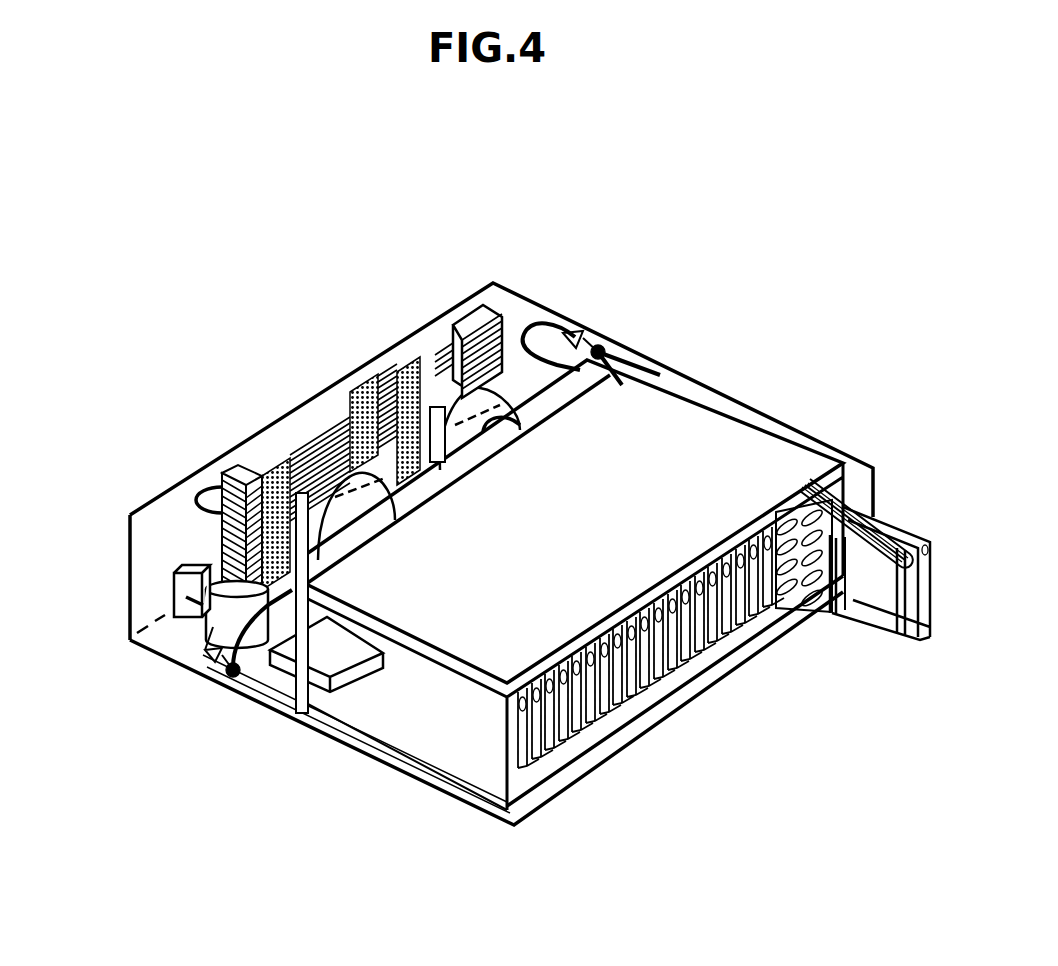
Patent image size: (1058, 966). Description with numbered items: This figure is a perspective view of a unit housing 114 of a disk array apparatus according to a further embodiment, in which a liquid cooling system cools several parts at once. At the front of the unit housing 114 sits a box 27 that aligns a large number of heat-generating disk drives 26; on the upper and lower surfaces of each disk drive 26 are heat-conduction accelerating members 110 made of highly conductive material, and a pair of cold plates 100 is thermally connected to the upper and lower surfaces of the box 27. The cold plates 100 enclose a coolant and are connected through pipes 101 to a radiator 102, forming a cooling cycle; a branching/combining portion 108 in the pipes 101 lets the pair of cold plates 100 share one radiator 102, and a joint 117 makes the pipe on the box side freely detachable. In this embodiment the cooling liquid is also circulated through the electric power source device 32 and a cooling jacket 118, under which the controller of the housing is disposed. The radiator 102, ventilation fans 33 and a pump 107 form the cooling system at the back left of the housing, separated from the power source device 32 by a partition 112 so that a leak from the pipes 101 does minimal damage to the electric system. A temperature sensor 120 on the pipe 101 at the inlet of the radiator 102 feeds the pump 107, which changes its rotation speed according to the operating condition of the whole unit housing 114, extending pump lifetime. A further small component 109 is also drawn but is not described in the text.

The disk drive 26 is at (888, 528).
The box 27 is at (432, 740).
The power source device 32 is at (560, 393).
The ventilation fan 33 is at (437, 372).
The cold plate 100 is at (688, 640).
The pipe 101 is at (262, 680).
The radiator 102 is at (265, 467).
The pump 107 is at (220, 608).
The branching/combining portion 108 is at (232, 676).
The terminal block 109 is at (178, 590).
The heat-conduction accelerating member 110 is at (850, 527).
The partition 112 is at (400, 388).
The unit housing 114 is at (708, 231).
The joint 117 is at (213, 658).
The jacket 118 is at (327, 658).
The temperature sensor 120 is at (222, 492).